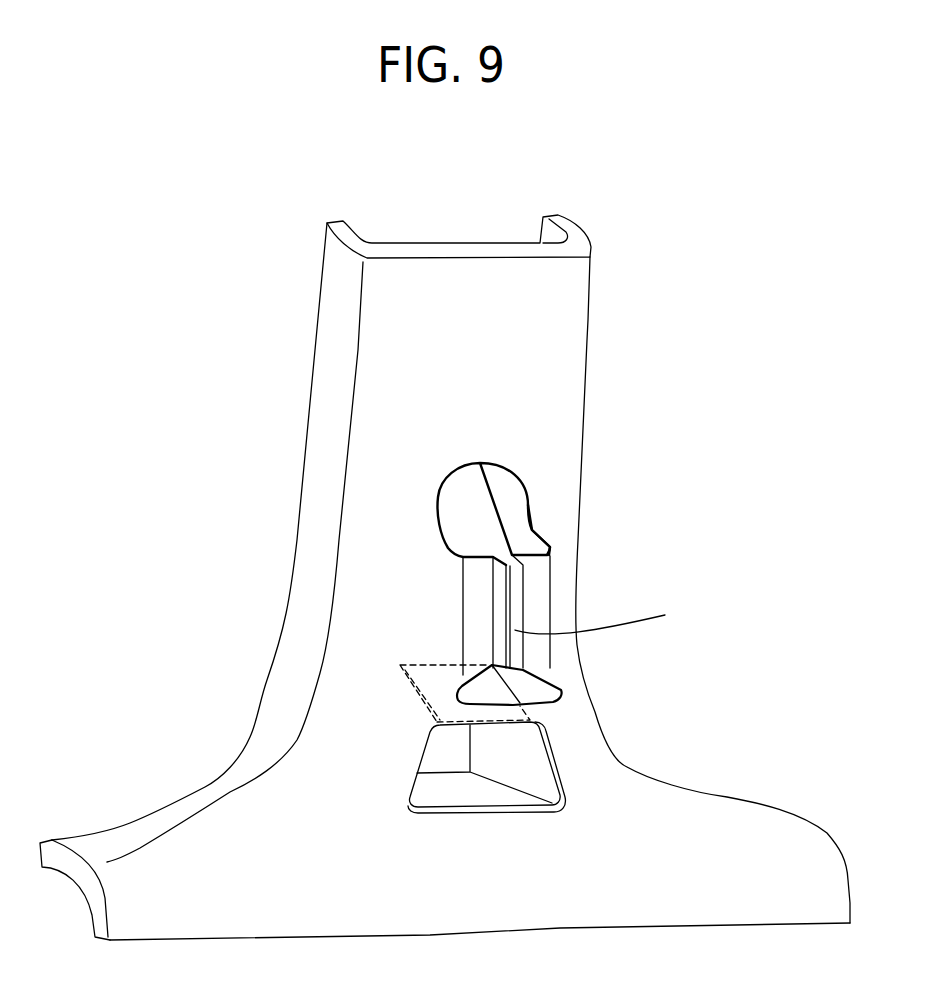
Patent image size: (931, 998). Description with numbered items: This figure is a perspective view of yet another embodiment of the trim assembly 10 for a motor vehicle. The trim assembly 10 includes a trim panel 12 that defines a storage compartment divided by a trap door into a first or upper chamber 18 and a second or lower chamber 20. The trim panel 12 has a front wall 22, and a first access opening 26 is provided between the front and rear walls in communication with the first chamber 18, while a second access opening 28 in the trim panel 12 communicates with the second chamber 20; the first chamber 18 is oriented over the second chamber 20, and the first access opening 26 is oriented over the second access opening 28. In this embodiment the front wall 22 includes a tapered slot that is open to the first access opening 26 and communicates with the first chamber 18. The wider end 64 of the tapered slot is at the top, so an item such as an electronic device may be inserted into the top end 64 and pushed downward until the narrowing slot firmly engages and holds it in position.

The trim assembly 10 is at (672, 287).
The trim panel 12 is at (392, 410).
The wider end of the tapered slot 64 is at (527, 512).
The first access opening 26 is at (543, 542).
The front wall 22 is at (540, 592).
The first or upper chamber 18 is at (527, 685).
The second or lower chamber 20 is at (437, 750).
The second access opening 28 is at (560, 775).